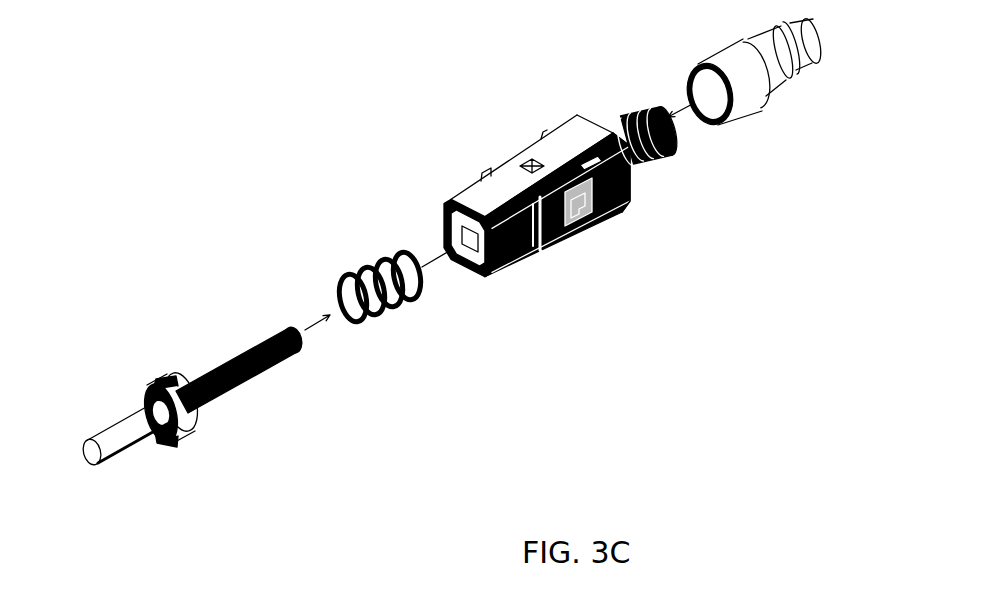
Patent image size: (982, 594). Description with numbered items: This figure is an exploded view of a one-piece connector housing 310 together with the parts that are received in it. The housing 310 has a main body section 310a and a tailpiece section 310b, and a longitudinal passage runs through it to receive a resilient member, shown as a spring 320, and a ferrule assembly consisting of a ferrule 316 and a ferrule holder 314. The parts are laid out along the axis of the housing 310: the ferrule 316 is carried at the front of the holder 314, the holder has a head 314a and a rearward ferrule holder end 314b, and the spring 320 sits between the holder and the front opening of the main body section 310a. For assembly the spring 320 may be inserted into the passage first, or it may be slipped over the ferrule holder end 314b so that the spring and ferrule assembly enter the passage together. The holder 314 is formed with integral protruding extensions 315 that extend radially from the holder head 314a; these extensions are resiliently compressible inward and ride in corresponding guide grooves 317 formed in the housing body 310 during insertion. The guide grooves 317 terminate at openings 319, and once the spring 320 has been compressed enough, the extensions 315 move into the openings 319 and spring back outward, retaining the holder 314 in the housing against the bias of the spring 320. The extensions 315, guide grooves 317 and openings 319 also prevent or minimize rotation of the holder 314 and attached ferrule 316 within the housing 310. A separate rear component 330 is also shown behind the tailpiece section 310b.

The housing 310 is at (528, 204).
The main body section 310a is at (515, 248).
The tailpiece section 310b is at (637, 117).
The ferrule holder 314 is at (223, 418).
The holder head 314a is at (185, 412).
The ferrule holder end 314b is at (268, 343).
The protruding extensions 315 is at (157, 382).
The ferrule 316 is at (118, 433).
The guide grooves 317 is at (442, 225).
The openings 319 is at (530, 168).
The spring 320 is at (372, 320).
The rear nut / sleeve 330 is at (752, 87).